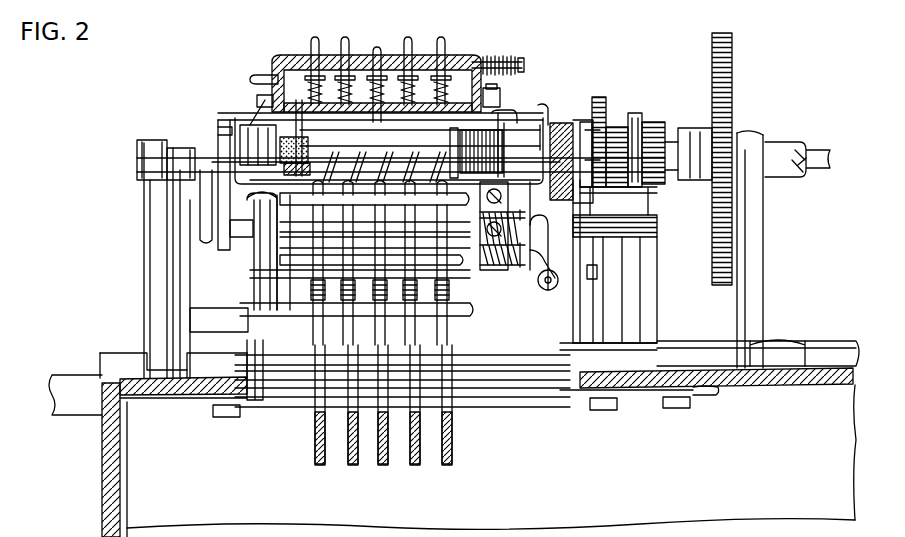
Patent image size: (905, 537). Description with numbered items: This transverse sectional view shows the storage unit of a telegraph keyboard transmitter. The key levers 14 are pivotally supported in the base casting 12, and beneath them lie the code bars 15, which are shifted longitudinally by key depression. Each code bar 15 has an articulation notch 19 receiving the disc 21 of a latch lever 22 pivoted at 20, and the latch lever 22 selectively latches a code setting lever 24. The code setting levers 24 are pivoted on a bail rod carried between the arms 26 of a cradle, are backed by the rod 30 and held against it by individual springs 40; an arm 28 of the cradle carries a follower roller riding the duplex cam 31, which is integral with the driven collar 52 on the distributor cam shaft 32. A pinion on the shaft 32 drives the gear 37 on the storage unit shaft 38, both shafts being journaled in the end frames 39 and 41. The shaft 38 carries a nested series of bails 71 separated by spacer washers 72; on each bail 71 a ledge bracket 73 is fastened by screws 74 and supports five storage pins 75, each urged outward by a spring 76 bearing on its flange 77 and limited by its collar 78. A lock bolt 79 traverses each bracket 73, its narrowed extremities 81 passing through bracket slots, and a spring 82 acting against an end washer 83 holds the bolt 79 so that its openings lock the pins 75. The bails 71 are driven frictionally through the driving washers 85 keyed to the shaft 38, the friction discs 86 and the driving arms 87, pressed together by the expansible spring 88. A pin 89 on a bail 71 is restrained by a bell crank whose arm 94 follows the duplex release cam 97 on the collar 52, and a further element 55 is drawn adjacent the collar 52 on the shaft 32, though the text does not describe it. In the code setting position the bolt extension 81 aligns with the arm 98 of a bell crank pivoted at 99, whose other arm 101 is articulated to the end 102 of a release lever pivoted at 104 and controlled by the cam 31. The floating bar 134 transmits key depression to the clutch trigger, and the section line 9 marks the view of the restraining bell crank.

The section line 9- 9 is at (238, 22).
The base casting 12 is at (103, 477).
The key lever 14 is at (58, 382).
The code bar 15 is at (410, 460).
The articulation notch 19 is at (380, 452).
The latch lever pivot 20 is at (275, 395).
The disc 21 is at (320, 428).
The latch lever 22 is at (450, 400).
The code setting lever 24 is at (340, 292).
The arm 26 is at (300, 395).
The arm 28 is at (620, 330).
The rod 30 is at (278, 263).
The duplex cam 31 is at (596, 97).
The distributor cam shaft 32 is at (778, 142).
The driven gear 37 is at (726, 90).
The storage unit shaft 38 is at (138, 160).
The end frame 39 is at (752, 262).
The spring 40 is at (438, 300).
The end frame 41 is at (152, 214).
The driven collar 52 is at (612, 127).
The spring 55 is at (570, 122).
The bail 71 is at (235, 125).
The spacer washer 72 is at (252, 192).
The ledge bracket 73 is at (472, 60).
The screw 74 is at (500, 90).
The storage pin 75 is at (366, 52).
The spring 76 is at (388, 95).
The flange 77 is at (444, 58).
The collar 78 is at (308, 50).
The lock bolt 79 is at (340, 60).
The narrowed extremity 81 is at (530, 270).
The spring 82 is at (510, 56).
The end washer 83 is at (524, 62).
The driving washer 85 is at (250, 127).
The friction disc 86 is at (230, 229).
The driving arm 87 is at (306, 145).
The expansible spring 88 is at (350, 150).
The pin 89 is at (262, 75).
The bell crank arm 94 is at (642, 195).
The duplex release cam 97 is at (636, 113).
The bell crank arm 98 is at (540, 290).
The bell crank pivot 99 is at (556, 283).
The bell crank arm 101 is at (600, 278).
The release lever end 102 is at (605, 260).
The release lever pivot 104 is at (632, 230).
The floating bar 134 is at (205, 317).